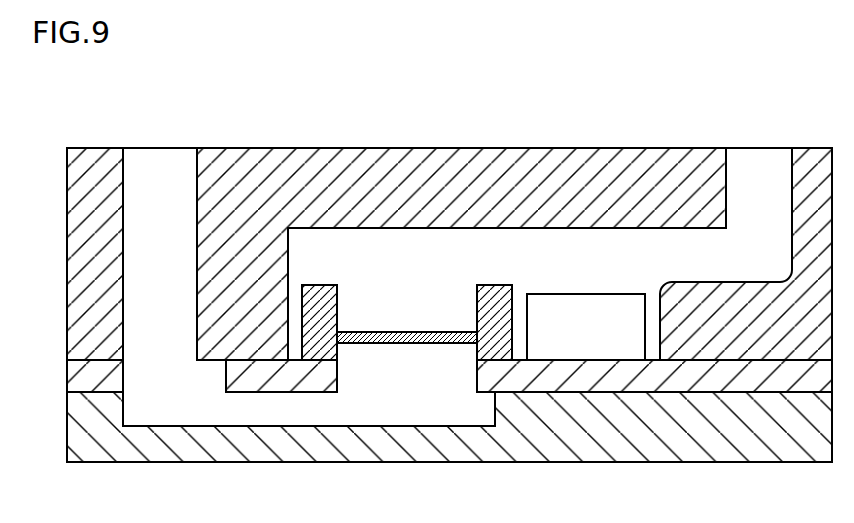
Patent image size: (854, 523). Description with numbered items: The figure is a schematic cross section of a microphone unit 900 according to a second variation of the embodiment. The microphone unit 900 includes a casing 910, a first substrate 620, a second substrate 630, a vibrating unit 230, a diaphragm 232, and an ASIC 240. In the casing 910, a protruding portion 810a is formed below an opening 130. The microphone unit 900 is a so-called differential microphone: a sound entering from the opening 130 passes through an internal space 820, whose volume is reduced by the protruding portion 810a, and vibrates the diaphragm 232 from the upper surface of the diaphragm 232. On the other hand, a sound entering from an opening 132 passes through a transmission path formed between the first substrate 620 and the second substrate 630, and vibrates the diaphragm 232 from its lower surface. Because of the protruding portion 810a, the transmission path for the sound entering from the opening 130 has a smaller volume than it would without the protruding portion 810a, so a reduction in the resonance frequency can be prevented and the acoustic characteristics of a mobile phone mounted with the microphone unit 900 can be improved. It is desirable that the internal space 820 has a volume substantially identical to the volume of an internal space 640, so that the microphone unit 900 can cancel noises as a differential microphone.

The microphone unit 900 is at (237, 93).
The casing 910 is at (93, 158).
The opening 132 is at (163, 158).
The internal space 820 is at (380, 250).
The opening 130 is at (744, 155).
The protruding portion 810a is at (717, 288).
The vibrating unit 230 is at (318, 292).
The diaphragm 232 is at (400, 330).
The ASIC 240 is at (584, 305).
The first substrate 620 is at (77, 378).
The second substrate 630 is at (77, 426).
The internal space 640 is at (403, 408).